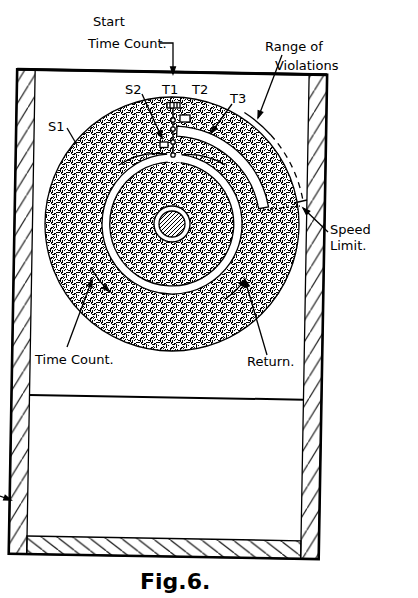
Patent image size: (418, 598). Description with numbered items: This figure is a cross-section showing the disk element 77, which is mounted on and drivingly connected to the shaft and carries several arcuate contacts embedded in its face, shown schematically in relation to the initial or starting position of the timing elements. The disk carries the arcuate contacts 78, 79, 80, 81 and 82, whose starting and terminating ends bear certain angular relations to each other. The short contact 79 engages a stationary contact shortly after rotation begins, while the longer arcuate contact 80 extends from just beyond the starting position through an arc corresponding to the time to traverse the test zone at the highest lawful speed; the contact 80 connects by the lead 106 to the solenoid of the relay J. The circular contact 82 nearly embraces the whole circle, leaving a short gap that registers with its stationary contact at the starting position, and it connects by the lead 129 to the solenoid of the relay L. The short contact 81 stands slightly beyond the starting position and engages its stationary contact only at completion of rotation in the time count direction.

The disk element 77 is at (197, 330).
The arcuate contact 78 is at (178, 104).
The contact T2 79 is at (197, 137).
The contact T3 80 is at (233, 153).
The short contact S2 81 is at (137, 170).
The circular contact 82 is at (115, 177).
The lead 106 is at (187, 112).
The lead 129 is at (130, 165).